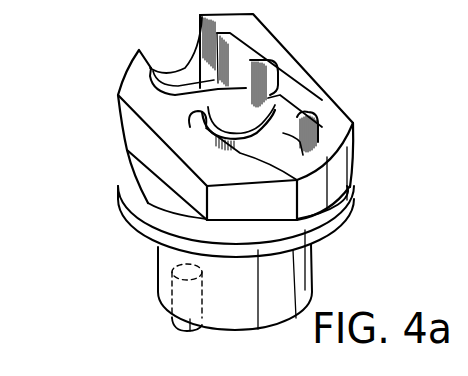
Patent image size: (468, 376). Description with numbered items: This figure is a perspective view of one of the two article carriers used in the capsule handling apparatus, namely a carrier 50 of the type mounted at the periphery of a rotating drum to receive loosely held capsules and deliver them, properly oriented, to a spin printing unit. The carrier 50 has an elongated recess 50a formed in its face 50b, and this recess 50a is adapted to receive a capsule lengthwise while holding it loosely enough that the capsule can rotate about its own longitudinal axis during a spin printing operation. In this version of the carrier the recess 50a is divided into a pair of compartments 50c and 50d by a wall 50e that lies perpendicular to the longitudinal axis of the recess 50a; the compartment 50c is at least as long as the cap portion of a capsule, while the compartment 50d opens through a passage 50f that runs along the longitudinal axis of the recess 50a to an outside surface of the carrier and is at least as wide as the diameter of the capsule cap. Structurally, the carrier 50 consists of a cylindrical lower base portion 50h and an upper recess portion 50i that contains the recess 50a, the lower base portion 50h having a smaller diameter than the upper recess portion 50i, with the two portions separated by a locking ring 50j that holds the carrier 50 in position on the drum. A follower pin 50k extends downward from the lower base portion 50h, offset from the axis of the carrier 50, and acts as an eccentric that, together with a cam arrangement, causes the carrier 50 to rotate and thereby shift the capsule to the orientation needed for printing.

The carrier 50 is at (222, 189).
The elongated recess 50a is at (268, 85).
The face 50b is at (252, 40).
The compartment 50c is at (322, 102).
The compartment 50d is at (250, 62).
The wall 50e is at (198, 131).
The passage 50f is at (185, 75).
The cylindrical lower base portion 50h is at (306, 270).
The upper recess portion 50i is at (349, 143).
The locking ring 50j is at (133, 218).
The follower pin 50k is at (182, 318).